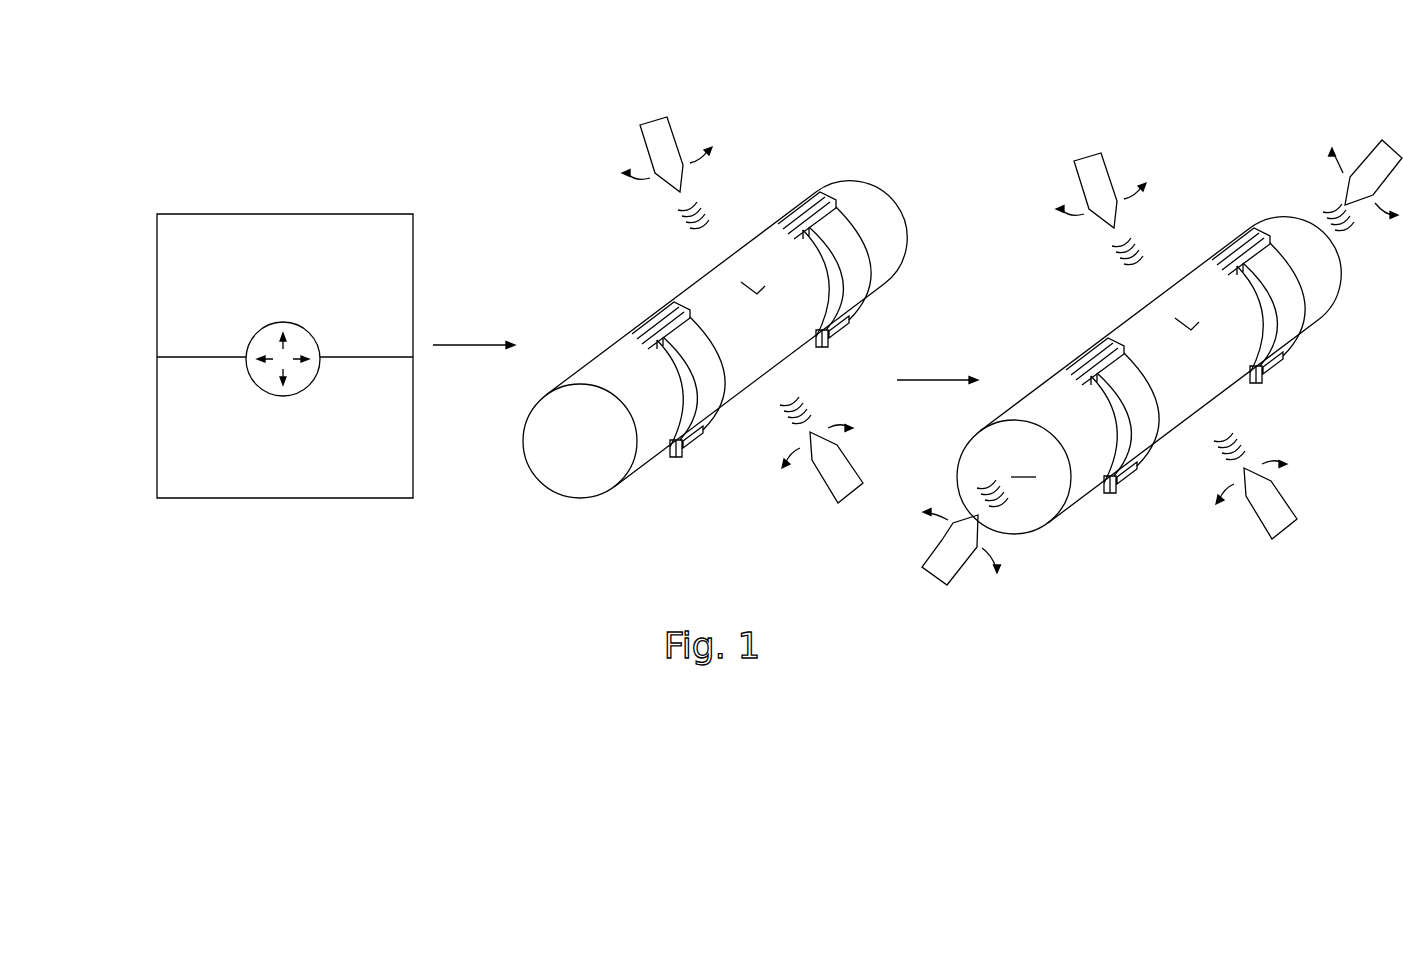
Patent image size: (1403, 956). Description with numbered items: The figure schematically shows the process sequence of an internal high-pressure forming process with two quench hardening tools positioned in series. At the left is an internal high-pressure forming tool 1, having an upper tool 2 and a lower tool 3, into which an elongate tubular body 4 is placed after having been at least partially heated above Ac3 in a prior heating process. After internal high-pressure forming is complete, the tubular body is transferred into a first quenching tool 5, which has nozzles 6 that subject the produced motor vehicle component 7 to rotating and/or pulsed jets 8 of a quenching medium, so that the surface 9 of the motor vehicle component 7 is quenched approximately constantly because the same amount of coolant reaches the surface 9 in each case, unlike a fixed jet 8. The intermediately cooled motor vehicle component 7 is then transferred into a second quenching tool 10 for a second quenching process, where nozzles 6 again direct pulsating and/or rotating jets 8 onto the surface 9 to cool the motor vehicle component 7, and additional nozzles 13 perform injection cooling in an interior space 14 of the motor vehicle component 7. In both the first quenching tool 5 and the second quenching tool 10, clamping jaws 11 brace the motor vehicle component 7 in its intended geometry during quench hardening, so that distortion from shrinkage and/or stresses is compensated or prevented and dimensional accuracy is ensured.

The internal high-pressure forming tool 1 is at (152, 175).
The upper tool 2 is at (197, 308).
The lower tool 3 is at (197, 415).
The tubular body 4 is at (248, 341).
The first quenching tool 5 is at (541, 196).
The nozzles 6 is at (663, 147).
The motor vehicle component 7 is at (652, 427).
The jets 8 is at (675, 216).
The surface 9 is at (763, 290).
The second quenching tool 10 is at (975, 228).
The clamping jaws 11 is at (643, 323).
The nozzles 13 is at (1375, 172).
The interior space 14 is at (1023, 464).